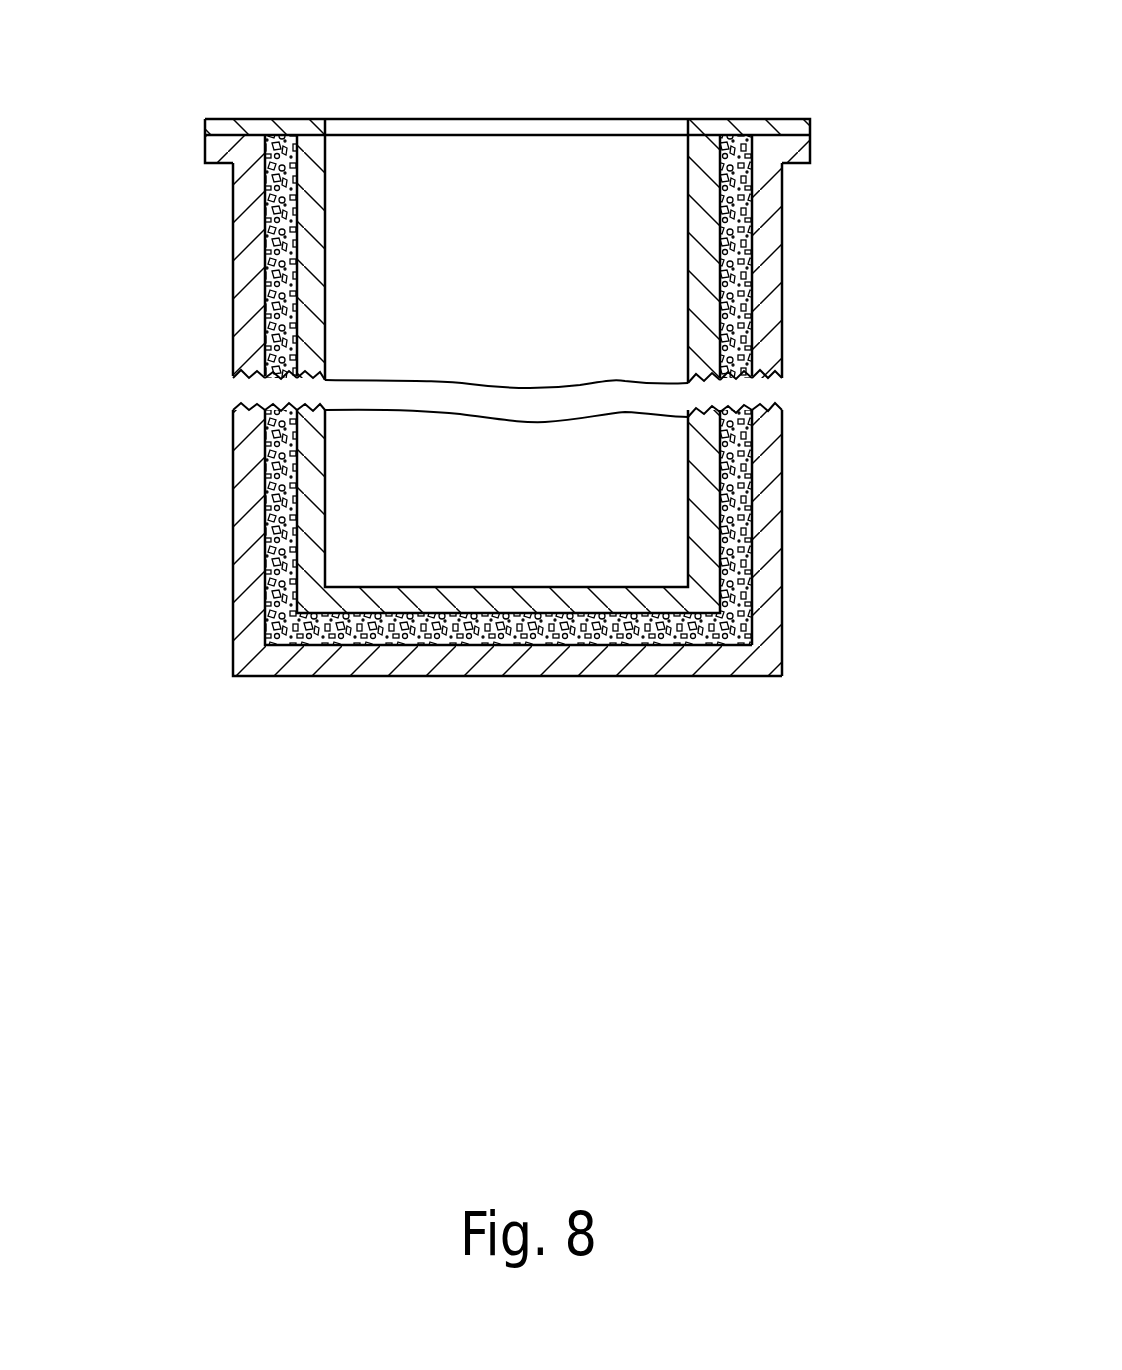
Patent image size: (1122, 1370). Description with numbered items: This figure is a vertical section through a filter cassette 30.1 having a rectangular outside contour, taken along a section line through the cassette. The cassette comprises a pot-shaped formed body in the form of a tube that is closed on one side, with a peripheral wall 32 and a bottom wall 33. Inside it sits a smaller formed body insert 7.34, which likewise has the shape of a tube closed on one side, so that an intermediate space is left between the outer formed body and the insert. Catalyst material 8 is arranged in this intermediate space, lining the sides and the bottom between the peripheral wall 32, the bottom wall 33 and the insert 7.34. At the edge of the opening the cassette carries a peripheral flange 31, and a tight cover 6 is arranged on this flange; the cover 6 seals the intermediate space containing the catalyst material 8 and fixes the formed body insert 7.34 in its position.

The tight cover 6 is at (732, 120).
The peripheral flange 31 is at (205, 162).
The crucible wall assembly 30.1 is at (224, 348).
The inner lining 7.34 is at (707, 327).
The peripheral wall 32 is at (755, 478).
The catalyst material 8 is at (753, 580).
The bottom wall 33 is at (655, 670).